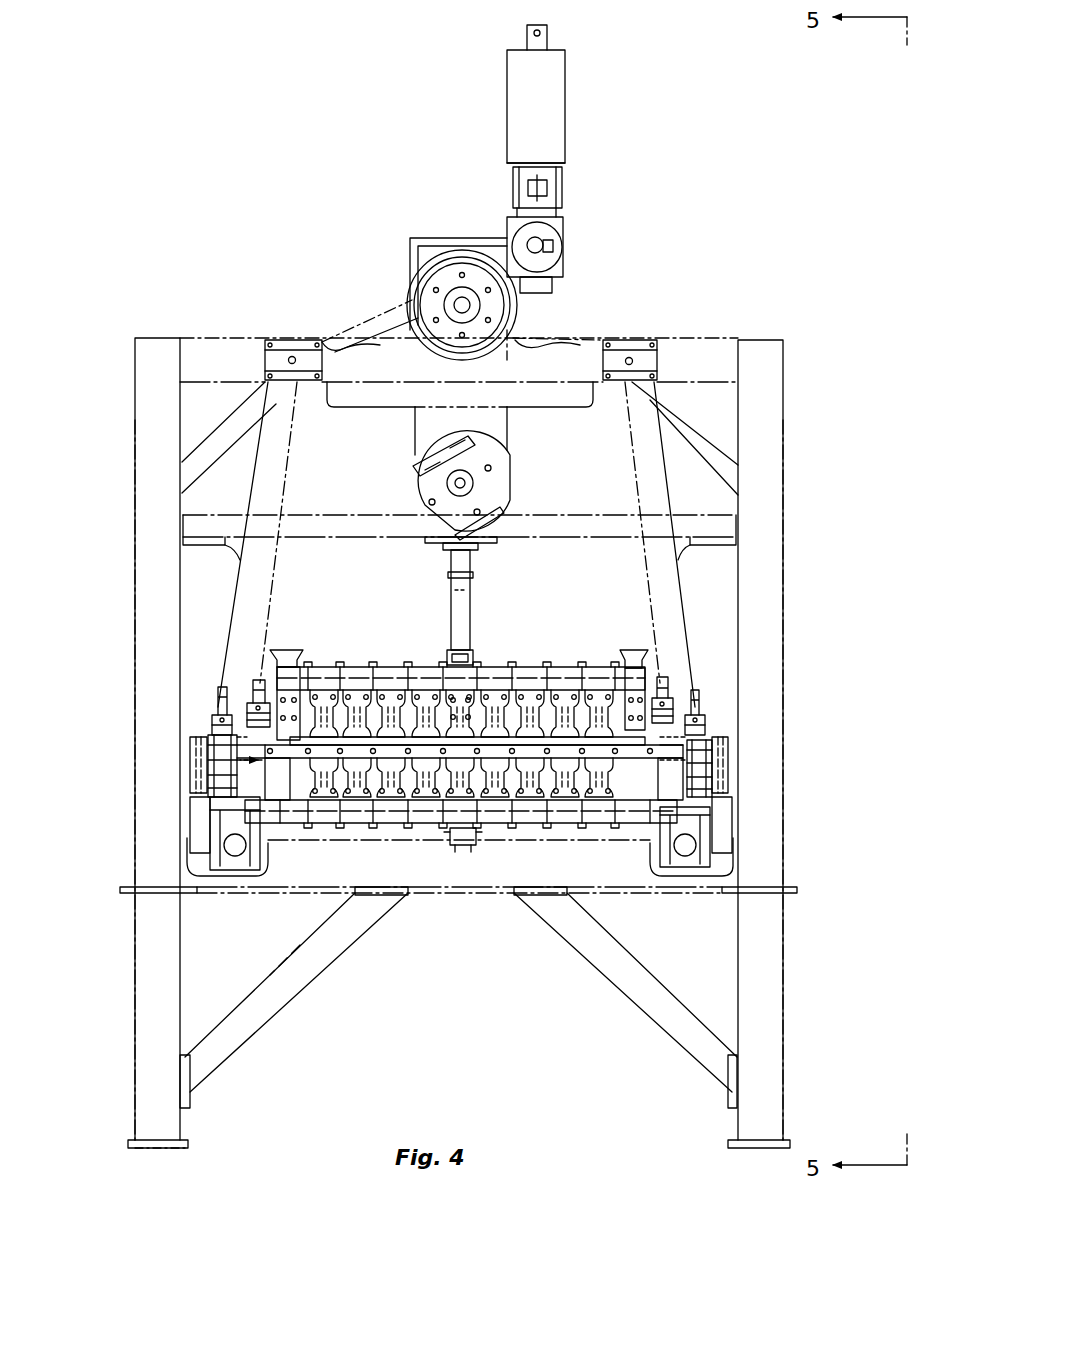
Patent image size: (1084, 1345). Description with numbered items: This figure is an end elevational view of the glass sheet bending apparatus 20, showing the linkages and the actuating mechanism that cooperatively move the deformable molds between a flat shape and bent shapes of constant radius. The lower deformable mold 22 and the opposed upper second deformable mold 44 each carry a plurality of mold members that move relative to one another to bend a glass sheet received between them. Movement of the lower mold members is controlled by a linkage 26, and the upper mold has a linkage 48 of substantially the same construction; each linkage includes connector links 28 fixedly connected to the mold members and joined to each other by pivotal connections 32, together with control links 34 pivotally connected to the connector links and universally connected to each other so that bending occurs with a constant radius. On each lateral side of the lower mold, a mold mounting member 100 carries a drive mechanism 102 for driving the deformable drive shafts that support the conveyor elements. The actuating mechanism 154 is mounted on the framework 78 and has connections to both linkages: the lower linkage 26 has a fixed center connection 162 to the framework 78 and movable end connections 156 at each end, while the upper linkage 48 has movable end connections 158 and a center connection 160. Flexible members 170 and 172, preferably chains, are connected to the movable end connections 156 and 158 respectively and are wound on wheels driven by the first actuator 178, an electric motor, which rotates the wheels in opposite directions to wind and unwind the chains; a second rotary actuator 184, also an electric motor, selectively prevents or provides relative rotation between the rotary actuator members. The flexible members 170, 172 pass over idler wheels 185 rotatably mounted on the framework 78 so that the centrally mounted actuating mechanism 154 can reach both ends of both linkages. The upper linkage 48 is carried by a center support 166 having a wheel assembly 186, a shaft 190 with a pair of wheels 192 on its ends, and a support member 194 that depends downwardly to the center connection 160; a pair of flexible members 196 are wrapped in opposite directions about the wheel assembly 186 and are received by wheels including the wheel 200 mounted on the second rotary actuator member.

The glass sheet bending apparatus 20 is at (352, 154).
The deformable mold 22 is at (203, 828).
The linkage 26 is at (222, 768).
The connector links 28 is at (258, 800).
The pivotal connections 32 is at (372, 743).
The control links 34 is at (353, 742).
The second deformable mold 44 is at (258, 737).
The linkage 48 is at (262, 686).
The framework 78 is at (800, 462).
The mold mounting members 100 is at (230, 762).
The drive mechanism 102 is at (196, 752).
The actuating mechanism 154 is at (478, 208).
The movable end connections 156 is at (246, 712).
The movable end connections 158 is at (220, 708).
The center connection 160 is at (472, 650).
The fixed center connection 162 is at (472, 868).
The center support 166 is at (477, 581).
The flexible members 170 is at (722, 466).
The flexible members 172 is at (642, 505).
The first actuator 178 is at (553, 82).
The second rotary actuator 184 is at (546, 264).
The idler wheels 185 is at (292, 340).
The wheel assembly 186 is at (412, 462).
The shaft 190 is at (454, 484).
The wheels 192 is at (497, 481).
The support member 194 is at (457, 617).
The flexible members 196 is at (470, 416).
The wheel 200 is at (422, 298).